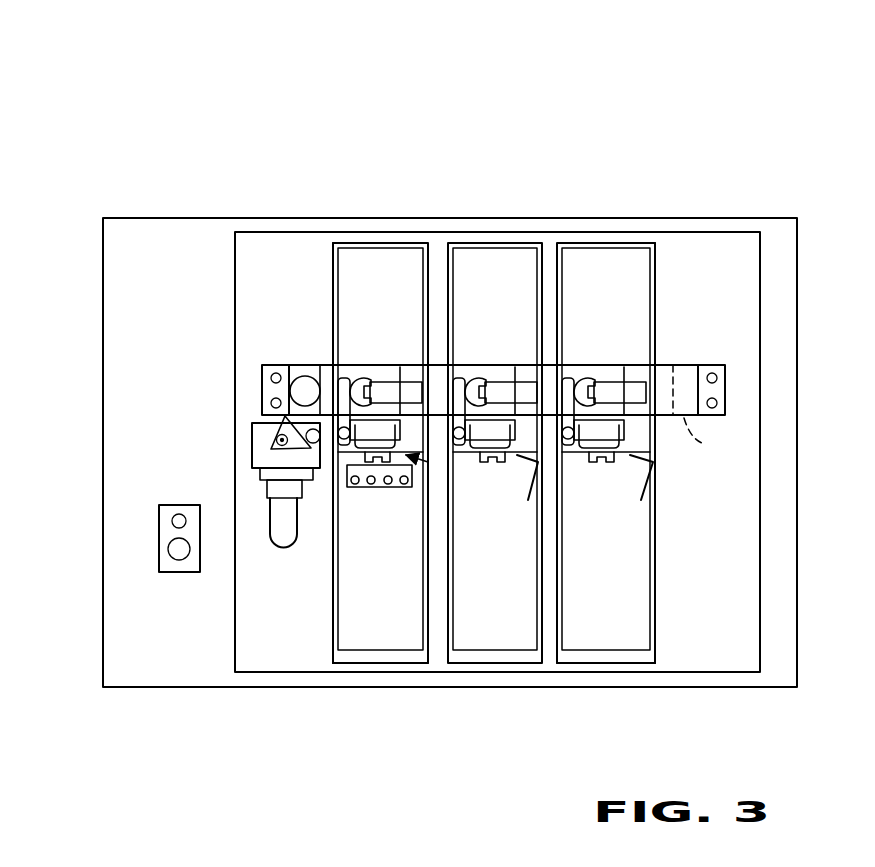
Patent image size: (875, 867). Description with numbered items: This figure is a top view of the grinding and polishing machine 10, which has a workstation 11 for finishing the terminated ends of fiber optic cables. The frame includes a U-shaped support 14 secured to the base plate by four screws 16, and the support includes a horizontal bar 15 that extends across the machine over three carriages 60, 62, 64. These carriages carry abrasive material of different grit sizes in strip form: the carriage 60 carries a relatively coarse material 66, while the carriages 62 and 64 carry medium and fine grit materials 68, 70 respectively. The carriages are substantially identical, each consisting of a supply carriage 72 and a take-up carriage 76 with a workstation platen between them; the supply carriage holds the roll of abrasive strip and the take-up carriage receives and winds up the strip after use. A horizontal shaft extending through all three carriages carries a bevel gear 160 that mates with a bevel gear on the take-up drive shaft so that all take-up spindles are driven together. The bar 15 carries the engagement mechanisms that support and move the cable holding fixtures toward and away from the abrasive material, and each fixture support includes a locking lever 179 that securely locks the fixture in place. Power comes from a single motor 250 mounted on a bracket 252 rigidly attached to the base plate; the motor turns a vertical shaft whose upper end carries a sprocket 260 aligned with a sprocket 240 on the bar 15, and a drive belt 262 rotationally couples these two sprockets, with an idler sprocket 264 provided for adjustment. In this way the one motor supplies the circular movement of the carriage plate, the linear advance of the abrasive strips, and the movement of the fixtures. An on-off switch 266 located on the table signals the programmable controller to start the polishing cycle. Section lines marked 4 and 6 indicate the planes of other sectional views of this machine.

The grinding and polishing machine 10 is at (138, 146).
The workstation 11 is at (435, 592).
The U-shaped support 14 is at (706, 448).
The horizontal bar 15 is at (666, 371).
The screws 16 is at (714, 403).
The carriage 60 is at (597, 231).
The carriage 62 is at (512, 231).
The carriage 64 is at (371, 233).
The coarse material 66 is at (605, 308).
The medium grit material 68 is at (494, 308).
The fine grit material 70 is at (379, 308).
The supply carriage 72 is at (333, 613).
The take-up carriage 76 is at (334, 301).
The bevel gear 160 is at (622, 462).
The locking lever 179 is at (528, 500).
The sprocket 240 is at (305, 388).
The motor 250 is at (284, 530).
The bracket 252 is at (263, 442).
The sprocket 260 is at (280, 450).
The drive belt 262 is at (262, 417).
The idler sprocket 264 is at (316, 446).
The on-off switch 266 is at (170, 573).
The section line 4- 4 is at (665, 299).
The section line 6- 6 is at (422, 148).